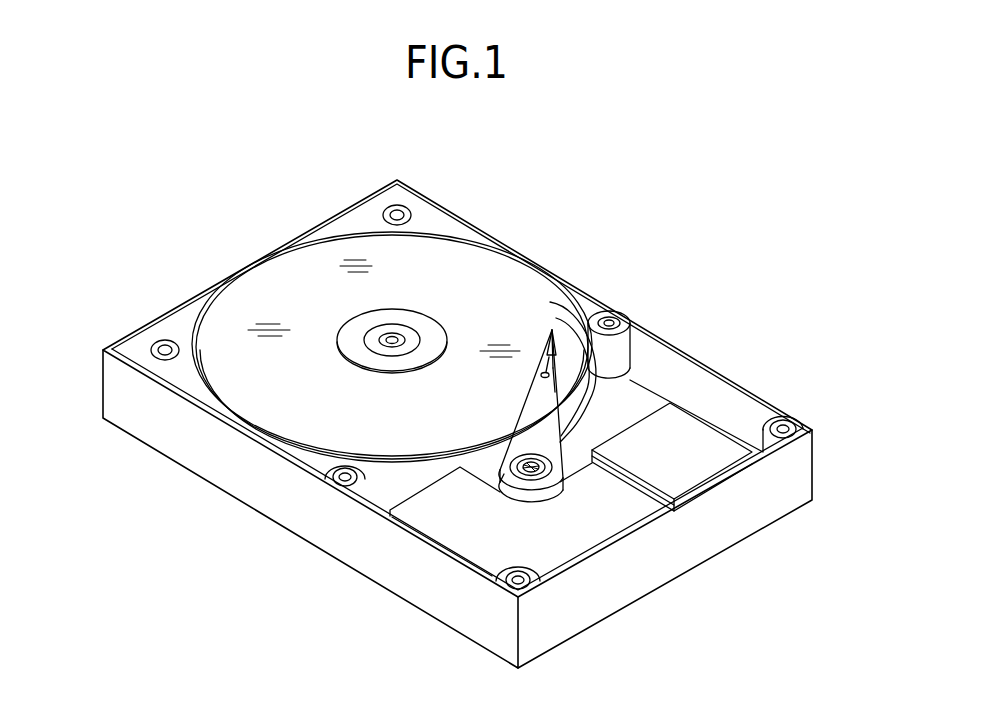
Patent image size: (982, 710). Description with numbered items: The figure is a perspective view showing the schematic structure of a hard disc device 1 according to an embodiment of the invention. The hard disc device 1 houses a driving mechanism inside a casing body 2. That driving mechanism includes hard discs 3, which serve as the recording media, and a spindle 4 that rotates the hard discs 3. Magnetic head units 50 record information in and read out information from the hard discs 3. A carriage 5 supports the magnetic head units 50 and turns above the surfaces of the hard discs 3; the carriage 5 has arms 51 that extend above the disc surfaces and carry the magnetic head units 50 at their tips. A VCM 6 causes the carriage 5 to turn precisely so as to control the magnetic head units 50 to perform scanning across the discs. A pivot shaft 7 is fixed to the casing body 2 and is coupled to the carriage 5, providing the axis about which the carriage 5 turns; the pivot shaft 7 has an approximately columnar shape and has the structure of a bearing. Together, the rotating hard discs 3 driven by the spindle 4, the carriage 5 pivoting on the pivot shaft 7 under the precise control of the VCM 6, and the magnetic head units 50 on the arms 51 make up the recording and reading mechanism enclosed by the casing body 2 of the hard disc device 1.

The hard disc device 1 is at (709, 208).
The casing body 2 is at (276, 502).
The hard discs 3 is at (507, 282).
The spindle 4 is at (372, 338).
The carriage 5 is at (590, 407).
The magnetic head units 50 is at (538, 342).
The arms 51 is at (588, 318).
The VCM 6 is at (450, 528).
The pivot shaft 7 is at (500, 482).